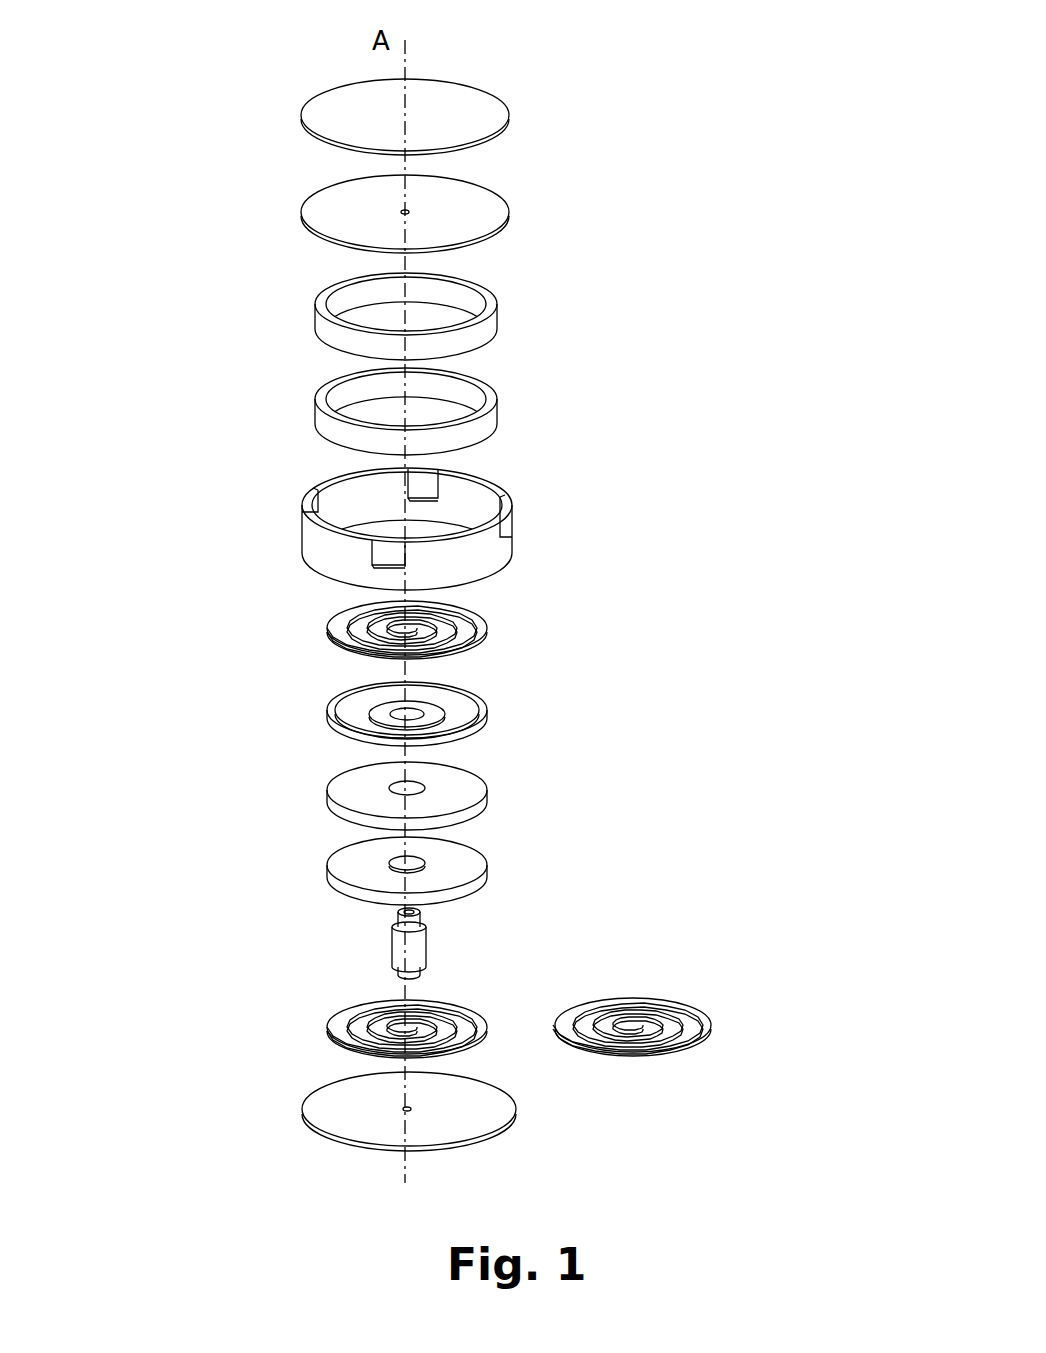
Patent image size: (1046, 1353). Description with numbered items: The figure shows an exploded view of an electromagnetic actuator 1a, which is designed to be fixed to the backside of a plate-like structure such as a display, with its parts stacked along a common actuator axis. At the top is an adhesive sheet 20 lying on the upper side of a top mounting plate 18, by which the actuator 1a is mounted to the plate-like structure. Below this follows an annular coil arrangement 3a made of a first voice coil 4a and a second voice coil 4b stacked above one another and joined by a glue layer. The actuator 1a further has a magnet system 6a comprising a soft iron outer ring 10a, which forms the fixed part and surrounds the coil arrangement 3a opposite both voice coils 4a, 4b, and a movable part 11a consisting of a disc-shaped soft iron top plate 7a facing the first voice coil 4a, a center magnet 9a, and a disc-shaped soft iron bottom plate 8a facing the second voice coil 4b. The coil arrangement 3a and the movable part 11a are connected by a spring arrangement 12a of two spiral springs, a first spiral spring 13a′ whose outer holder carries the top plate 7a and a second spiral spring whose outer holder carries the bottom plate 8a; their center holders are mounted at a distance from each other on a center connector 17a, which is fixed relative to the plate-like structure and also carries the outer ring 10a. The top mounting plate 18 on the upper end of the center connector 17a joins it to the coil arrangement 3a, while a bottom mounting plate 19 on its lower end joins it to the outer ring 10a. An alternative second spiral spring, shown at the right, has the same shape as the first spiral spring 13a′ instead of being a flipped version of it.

The electromagnetic actuator 1a is at (637, 58).
The adhesive sheet 20 is at (490, 115).
The top mounting plate 18 is at (490, 212).
The first voice coil 4a is at (483, 327).
The second voice coil 4b is at (490, 423).
The annular coil arrangement 3a is at (595, 333).
The outer ring 10a is at (500, 555).
The first spiral spring 13a′ is at (330, 640).
The top plate 7a is at (487, 725).
The center magnet 9a is at (485, 803).
The bottom plate 8a is at (487, 875).
The movable part of the magnet system 11a is at (585, 728).
The magnet system 6a is at (668, 672).
The spring arrangement 12a is at (205, 657).
The center connector 17a is at (417, 945).
The bottom mounting plate 19 is at (480, 1123).